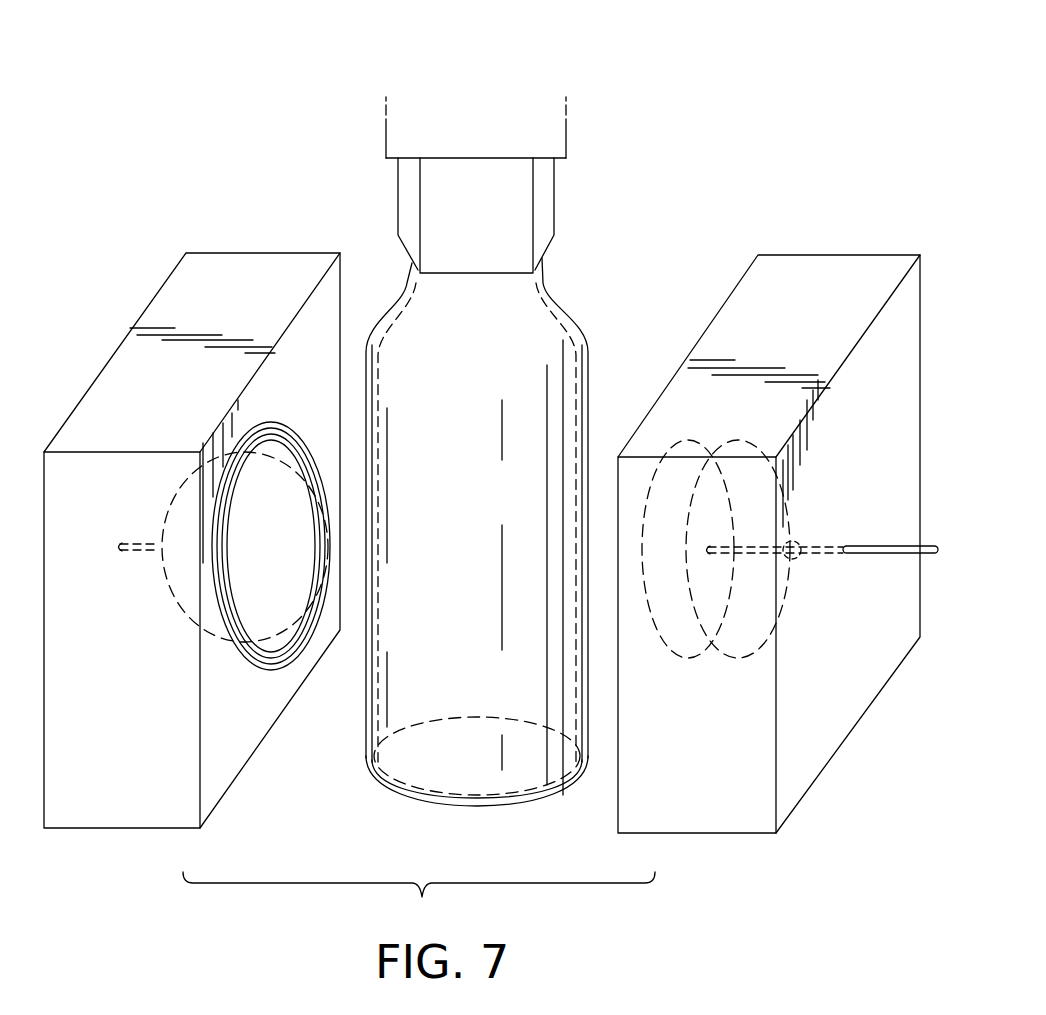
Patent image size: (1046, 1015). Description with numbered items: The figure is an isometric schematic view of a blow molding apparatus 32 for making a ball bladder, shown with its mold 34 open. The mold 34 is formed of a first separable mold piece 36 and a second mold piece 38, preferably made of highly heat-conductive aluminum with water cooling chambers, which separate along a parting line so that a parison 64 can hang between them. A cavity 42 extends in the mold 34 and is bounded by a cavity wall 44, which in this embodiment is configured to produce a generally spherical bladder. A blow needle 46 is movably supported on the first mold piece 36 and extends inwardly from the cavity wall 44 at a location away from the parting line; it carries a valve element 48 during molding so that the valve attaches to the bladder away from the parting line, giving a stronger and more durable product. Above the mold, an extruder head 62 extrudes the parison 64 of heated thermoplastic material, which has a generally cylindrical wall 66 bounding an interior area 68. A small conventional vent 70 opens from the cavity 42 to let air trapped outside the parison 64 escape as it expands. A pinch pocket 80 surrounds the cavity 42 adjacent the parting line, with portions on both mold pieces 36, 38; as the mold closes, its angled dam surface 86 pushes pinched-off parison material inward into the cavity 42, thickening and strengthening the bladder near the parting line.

The blow molding apparatus 32 is at (278, 86).
The mold 34 is at (797, 240).
The first separable mold piece 36 is at (708, 820).
The second mold piece 38 is at (124, 812).
The cavity 42 is at (292, 643).
The cavity wall 44 is at (300, 501).
The blow needle 46 is at (885, 557).
The valve element 48 is at (801, 538).
The extruder head 62 is at (545, 186).
The parison 64 is at (526, 808).
The generally cylindrical wall 66 is at (360, 722).
The interior area 68 is at (436, 776).
The vent 70 is at (133, 552).
The pinch pocket 80 is at (283, 419).
The angled dam surface 86 is at (268, 664).